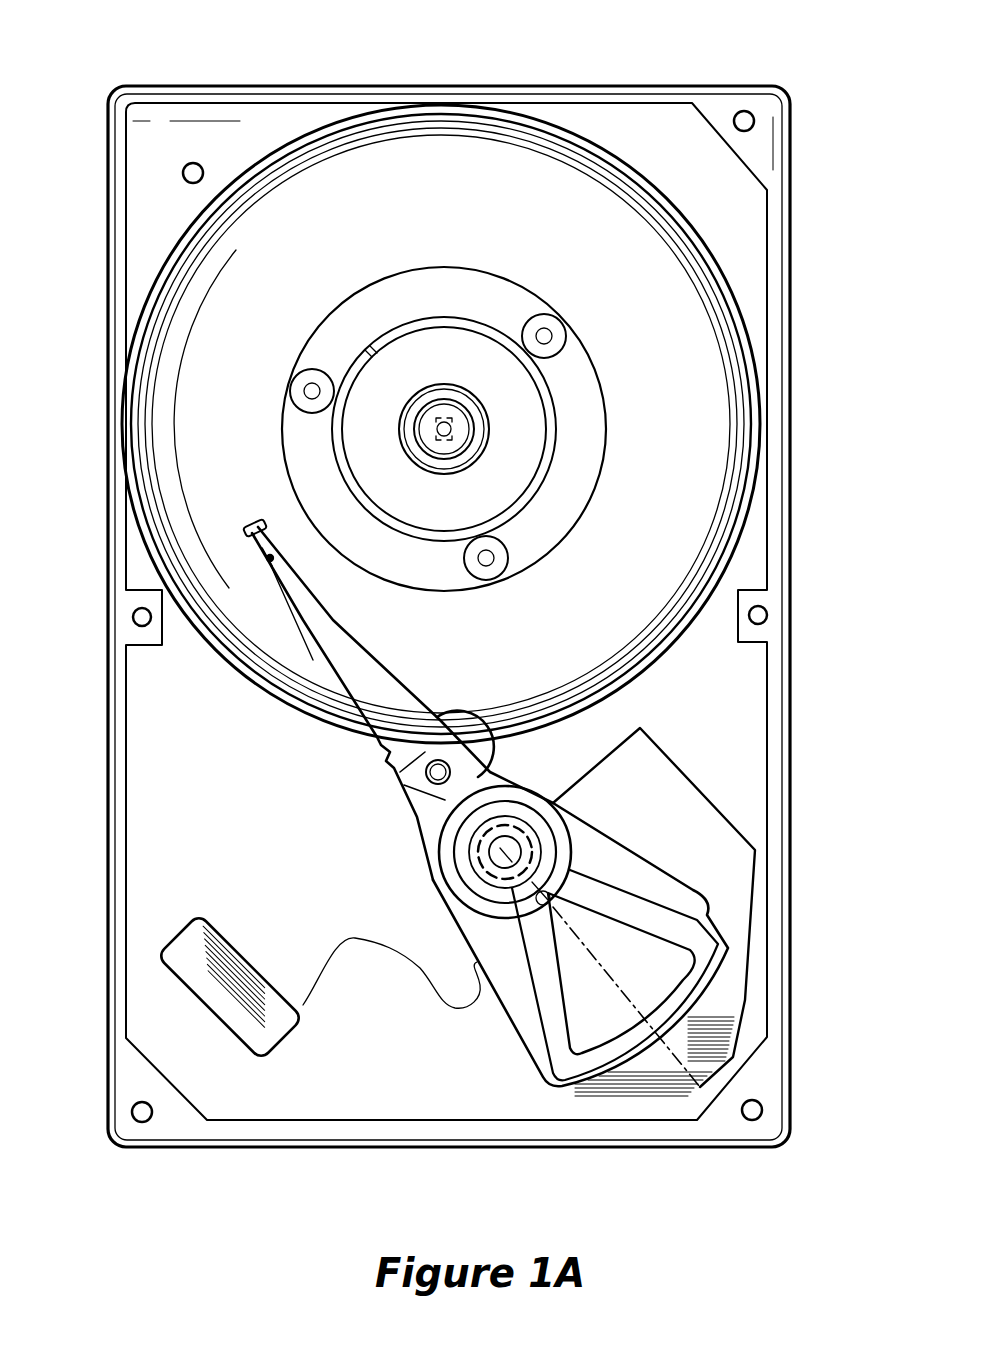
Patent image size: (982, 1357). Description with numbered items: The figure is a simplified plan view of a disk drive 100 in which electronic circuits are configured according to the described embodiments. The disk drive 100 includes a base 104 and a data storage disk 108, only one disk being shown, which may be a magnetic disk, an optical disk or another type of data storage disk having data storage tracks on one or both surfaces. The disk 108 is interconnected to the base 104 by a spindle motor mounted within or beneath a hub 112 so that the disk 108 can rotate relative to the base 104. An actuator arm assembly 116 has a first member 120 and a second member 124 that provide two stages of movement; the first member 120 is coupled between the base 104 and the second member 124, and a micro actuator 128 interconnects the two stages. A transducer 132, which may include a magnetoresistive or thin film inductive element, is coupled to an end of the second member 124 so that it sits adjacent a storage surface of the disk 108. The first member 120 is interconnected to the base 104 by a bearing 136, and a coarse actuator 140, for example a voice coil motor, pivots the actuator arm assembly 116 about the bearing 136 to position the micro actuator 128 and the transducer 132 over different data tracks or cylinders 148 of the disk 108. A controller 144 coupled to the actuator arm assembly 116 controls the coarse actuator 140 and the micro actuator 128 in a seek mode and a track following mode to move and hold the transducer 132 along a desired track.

The disk drive 100 is at (457, 60).
The base 104 is at (752, 721).
The data storage disk 108 is at (736, 392).
The hub 112 is at (428, 443).
The actuator arm assembly 116 is at (318, 645).
The first member 120 is at (343, 690).
The second member 124 is at (253, 543).
The micro actuator 128 is at (277, 580).
The transducer 132 is at (250, 523).
The bearing 136 is at (500, 852).
The coarse actuator 140 is at (578, 1068).
The controller 144 is at (245, 963).
The data tracks or cylinders 148 is at (347, 138).